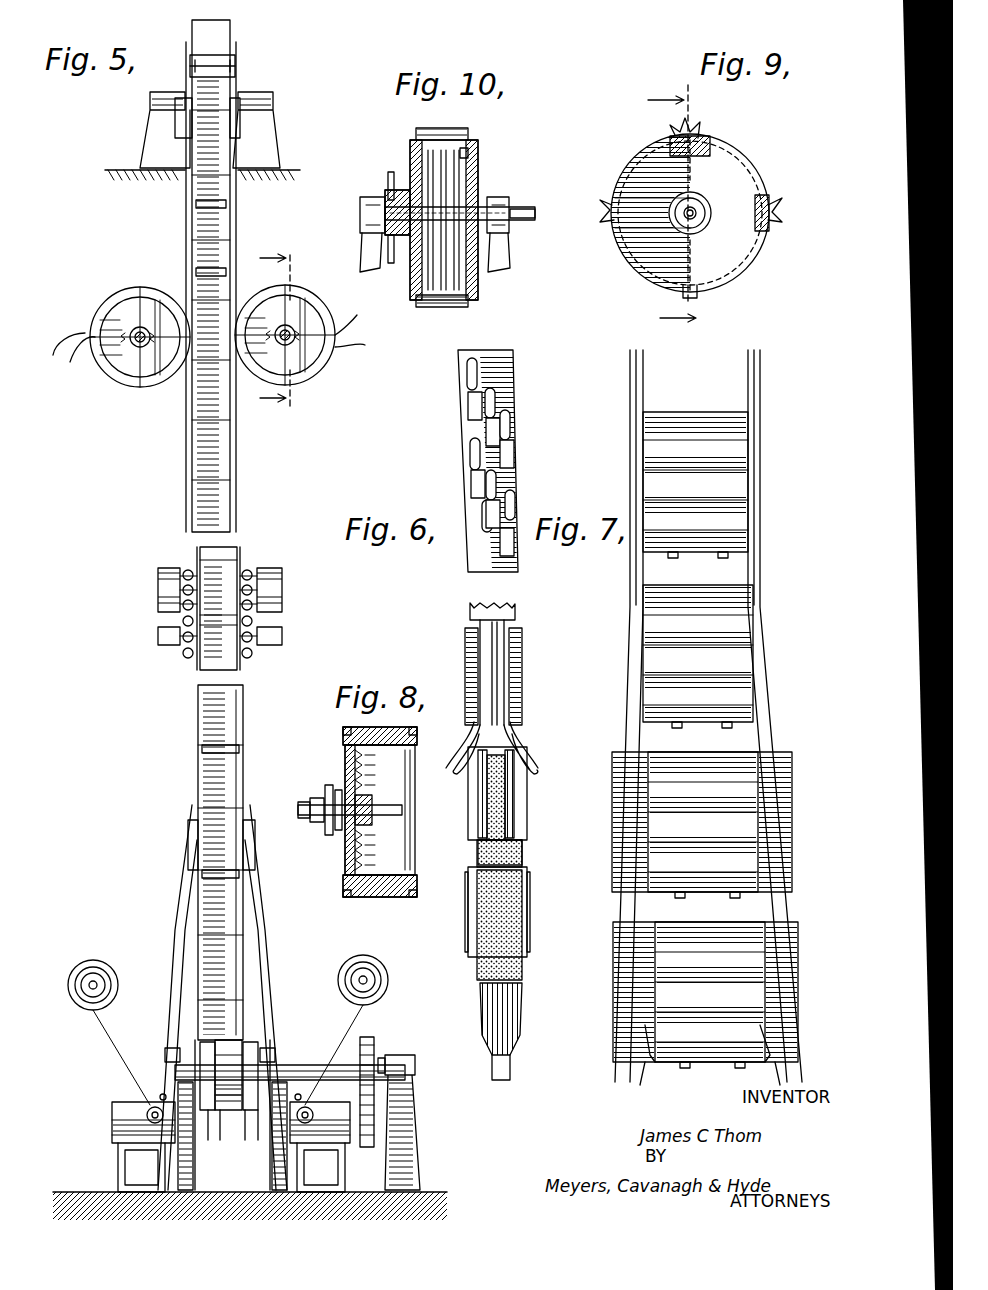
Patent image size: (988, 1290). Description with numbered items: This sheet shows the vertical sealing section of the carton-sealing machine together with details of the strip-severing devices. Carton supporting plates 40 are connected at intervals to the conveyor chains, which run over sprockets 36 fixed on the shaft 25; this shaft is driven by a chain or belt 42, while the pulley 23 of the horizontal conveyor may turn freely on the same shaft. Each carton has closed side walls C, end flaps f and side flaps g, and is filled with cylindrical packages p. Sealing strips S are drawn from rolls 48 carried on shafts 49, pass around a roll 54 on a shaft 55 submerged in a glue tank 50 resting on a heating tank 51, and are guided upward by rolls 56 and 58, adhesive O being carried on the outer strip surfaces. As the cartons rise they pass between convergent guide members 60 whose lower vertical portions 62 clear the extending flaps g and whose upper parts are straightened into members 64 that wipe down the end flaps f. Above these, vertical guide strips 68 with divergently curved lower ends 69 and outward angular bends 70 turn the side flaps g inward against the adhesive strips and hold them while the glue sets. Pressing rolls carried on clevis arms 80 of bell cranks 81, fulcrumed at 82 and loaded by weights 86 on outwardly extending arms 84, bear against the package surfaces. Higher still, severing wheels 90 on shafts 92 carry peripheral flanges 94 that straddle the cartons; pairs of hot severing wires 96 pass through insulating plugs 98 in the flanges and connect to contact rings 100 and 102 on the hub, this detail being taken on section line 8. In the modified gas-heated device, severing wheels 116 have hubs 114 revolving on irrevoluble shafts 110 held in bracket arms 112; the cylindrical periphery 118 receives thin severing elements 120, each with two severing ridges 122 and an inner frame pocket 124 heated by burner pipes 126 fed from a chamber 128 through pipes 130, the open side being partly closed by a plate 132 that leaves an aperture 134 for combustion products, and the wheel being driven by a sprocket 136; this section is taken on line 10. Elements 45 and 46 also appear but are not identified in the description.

In FIG. 5, the closed side wall C is at (205, 432).
In FIG. 5, the package carrier plate 40 is at (215, 72).
In FIG. 7, the package carrier plate 40 is at (722, 558).
In FIG. 5, the section line 8— 8 is at (281, 328).
In FIG. 5, the severing wheel 90 is at (130, 385).
In FIG. 8, the severing wheel 90 is at (347, 765).
In FIG. 5, the shaft 92 is at (135, 345).
In FIG. 8, the shaft 92 is at (355, 812).
In FIG. 5, the severing device 96 is at (75, 352).
In FIG. 8, the severing device 96 is at (385, 728).
In FIG. 8, the insulating plug 98 is at (417, 730).
In FIG. 8, the peripheral flange 94 is at (405, 895).
In FIG. 8, the contact ring 100 is at (332, 787).
In FIG. 8, the contact ring 102 is at (318, 824).
In FIG. 5, the clevis arm 80 is at (250, 660).
In FIG. 5, the fulcrum 82 is at (245, 572).
In FIG. 5, the outwardly extending arm 84 is at (255, 575).
In FIG. 5, the weight 86 is at (280, 580).
In FIG. 5, the angular bend of guide strip 70 is at (244, 758).
In FIG. 7, the angular bend of guide strip 70 is at (630, 608).
In FIG. 5, the divergently curved lower end 69 is at (190, 815).
In FIG. 6, the divergently curved lower end 69 is at (522, 735).
In FIG. 7, the divergently curved lower end 69 is at (770, 735).
In FIG. 7, the vertical guide strip 68 is at (760, 530).
In FIG. 5, the convergent guide member 60 is at (185, 975).
In FIG. 7, the convergent guide member 60 is at (780, 1015).
In FIG. 5, the lower vertical portion of guide member 62 is at (186, 1010).
In FIG. 5, the sealing strip S is at (275, 975).
In FIG. 6, the sealing strip S is at (527, 972).
In FIG. 7, the sealing strip S is at (790, 905).
In FIG. 5, the roll of sealing strip 48 is at (82, 1005).
In FIG. 6, the roll of sealing strip 48 is at (510, 452).
In FIG. 5, the roll shaft 49 is at (97, 985).
In FIG. 5, the glue tank 50 is at (112, 1105).
In FIG. 5, the heating tank 51 is at (231, 1167).
In FIG. 5, the glue roll 54 is at (312, 1110).
In FIG. 5, the glue roll shaft 55 is at (150, 1110).
In FIG. 5, the guide roll 56 is at (150, 1108).
In FIG. 5, the guide roll 58 is at (163, 1094).
In FIG. 5, the shaft 25 is at (298, 1065).
In FIG. 5, the chain or belt 42 is at (376, 1110).
In FIG. 5, the sprocket 36 is at (208, 1140).
In FIG. 5, the pulley 23 is at (228, 1142).
In FIG. 6, the chute 45 is at (505, 365).
In FIG. 6, the bottle 46 is at (470, 424).
In FIG. 6, the bell crank 81 is at (505, 560).
In FIG. 6, the adhesive on outer strip surface O is at (497, 785).
In FIG. 6, the side flap g is at (490, 805).
In FIG. 7, the side flap g is at (625, 822).
In FIG. 7, the cylindrical package p is at (738, 835).
In FIG. 7, the straightened guide member 64 is at (765, 872).
In FIG. 7, the end flap f is at (710, 1083).
In FIG. 10, the irrevoluble shaft 110 is at (400, 240).
In FIG. 10, the bracket arm 112 is at (365, 250).
In FIG. 10, the hub 114 is at (400, 158).
In FIG. 10, the severing wheel 116 is at (388, 190).
In FIG. 10, the cylindrical wheel periphery 118 is at (472, 298).
In FIG. 9, the cylindrical wheel periphery 118 is at (760, 190).
In FIG. 10, the severing element 120 is at (465, 130).
In FIG. 9, the severing element 120 is at (700, 138).
In FIG. 9, the severing ridge 122 is at (688, 128).
In FIG. 10, the inner frame pocket 124 is at (470, 150).
In FIG. 9, the inner frame pocket 124 is at (668, 140).
In FIG. 10, the burner pipe 126 is at (455, 200).
In FIG. 10, the chamber 128 is at (410, 295).
In FIG. 10, the gas supply pipe 130 is at (535, 213).
In FIG. 9, the gas supply pipe 130 is at (685, 218).
In FIG. 10, the plate 132 is at (470, 185).
In FIG. 10, the aperture 134 is at (478, 195).
In FIG. 9, the aperture 134 is at (705, 195).
In FIG. 10, the sprocket 136 is at (388, 186).
In FIG. 9, the section line 10— 10 is at (660, 206).